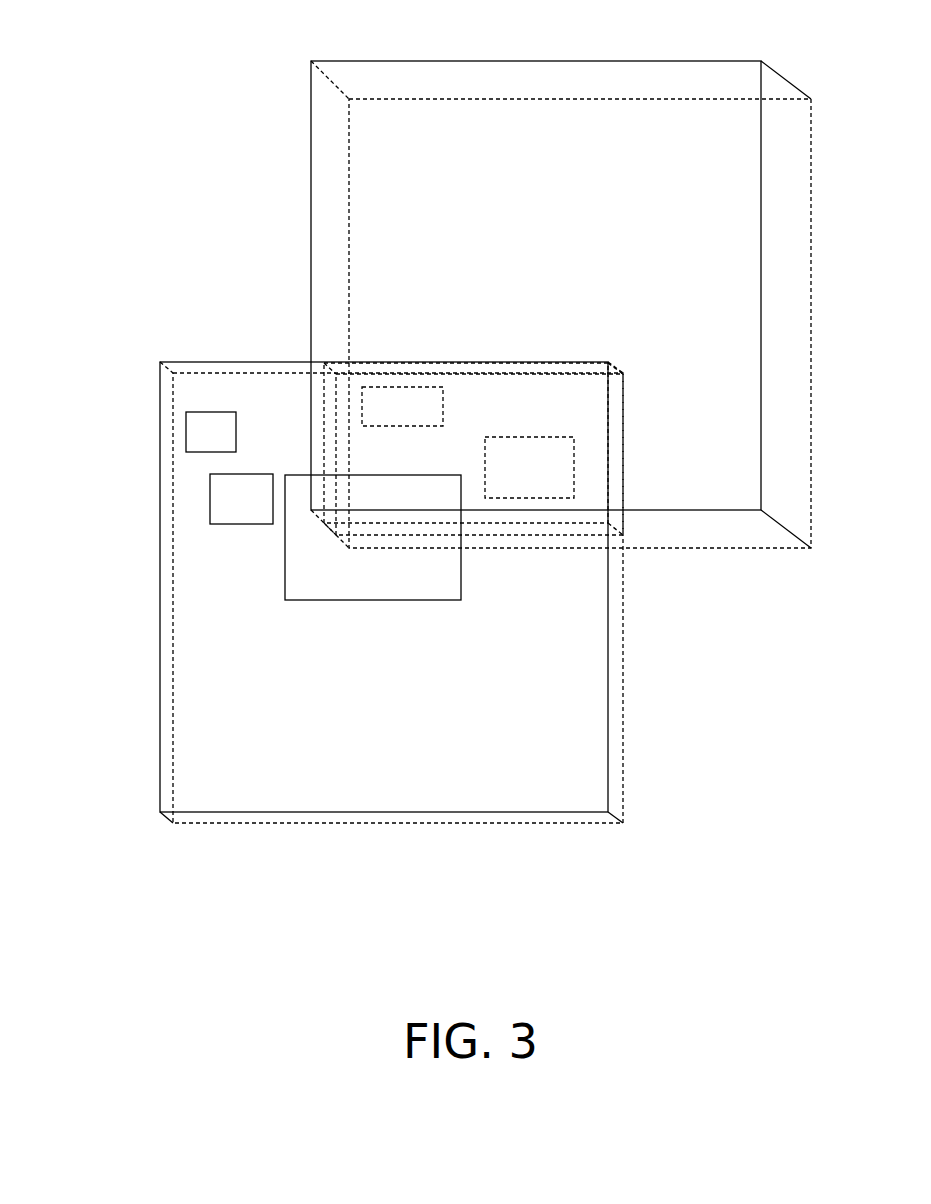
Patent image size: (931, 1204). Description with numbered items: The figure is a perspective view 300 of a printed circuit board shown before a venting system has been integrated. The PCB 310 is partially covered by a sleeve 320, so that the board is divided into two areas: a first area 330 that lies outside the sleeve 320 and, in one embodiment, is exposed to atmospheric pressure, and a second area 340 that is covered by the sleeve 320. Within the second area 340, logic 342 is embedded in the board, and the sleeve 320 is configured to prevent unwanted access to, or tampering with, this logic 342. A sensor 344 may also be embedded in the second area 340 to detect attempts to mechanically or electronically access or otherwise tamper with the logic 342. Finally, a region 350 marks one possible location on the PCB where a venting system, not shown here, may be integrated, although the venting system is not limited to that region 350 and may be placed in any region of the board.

The perspective view 300 is at (133, 918).
The PCB 310 is at (160, 475).
The sleeve 320 is at (425, 61).
The first area 330 is at (197, 672).
The second area 340 is at (538, 415).
The logic 342 is at (530, 437).
The sensor 344 is at (403, 387).
The region 350 is at (285, 572).